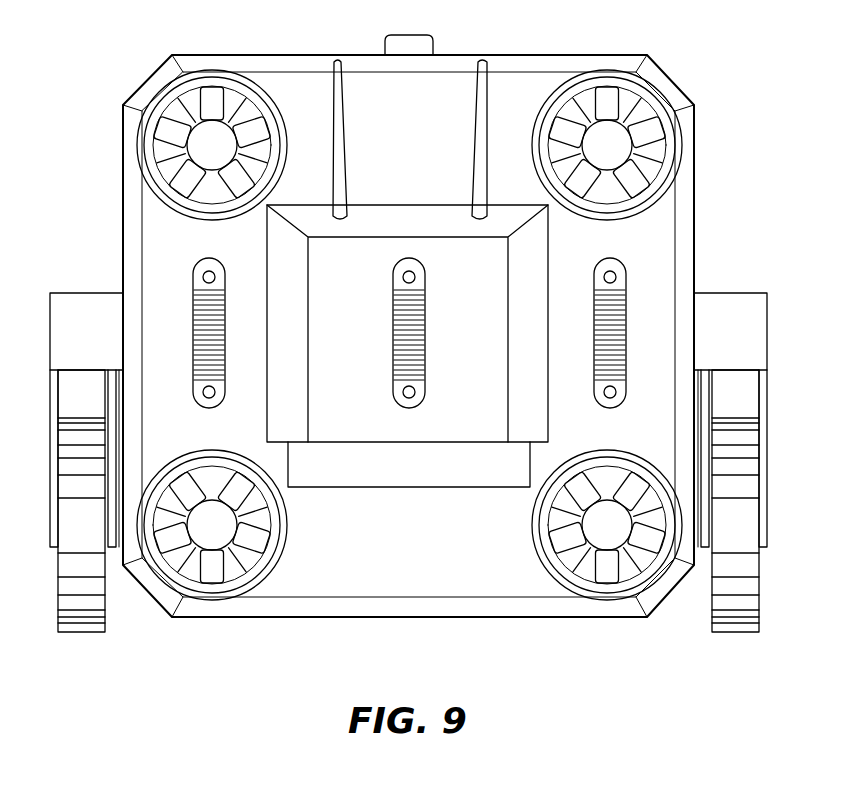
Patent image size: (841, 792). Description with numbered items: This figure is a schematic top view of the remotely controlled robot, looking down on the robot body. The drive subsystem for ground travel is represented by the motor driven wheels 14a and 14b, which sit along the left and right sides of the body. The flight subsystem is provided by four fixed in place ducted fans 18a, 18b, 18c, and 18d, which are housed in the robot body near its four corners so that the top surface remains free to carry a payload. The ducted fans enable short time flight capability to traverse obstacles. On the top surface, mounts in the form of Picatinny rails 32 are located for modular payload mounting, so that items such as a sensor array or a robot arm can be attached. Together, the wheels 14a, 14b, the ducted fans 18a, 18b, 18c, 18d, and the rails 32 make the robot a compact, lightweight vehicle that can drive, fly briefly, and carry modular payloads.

The motor driven wheel 14a is at (733, 597).
The motor driven wheel 14b is at (90, 595).
The ducted fan 18a is at (208, 575).
The ducted fan 18b is at (607, 575).
The ducted fan 18c is at (640, 112).
The ducted fan 18d is at (180, 112).
The Picatinny rail 32 is at (613, 320).